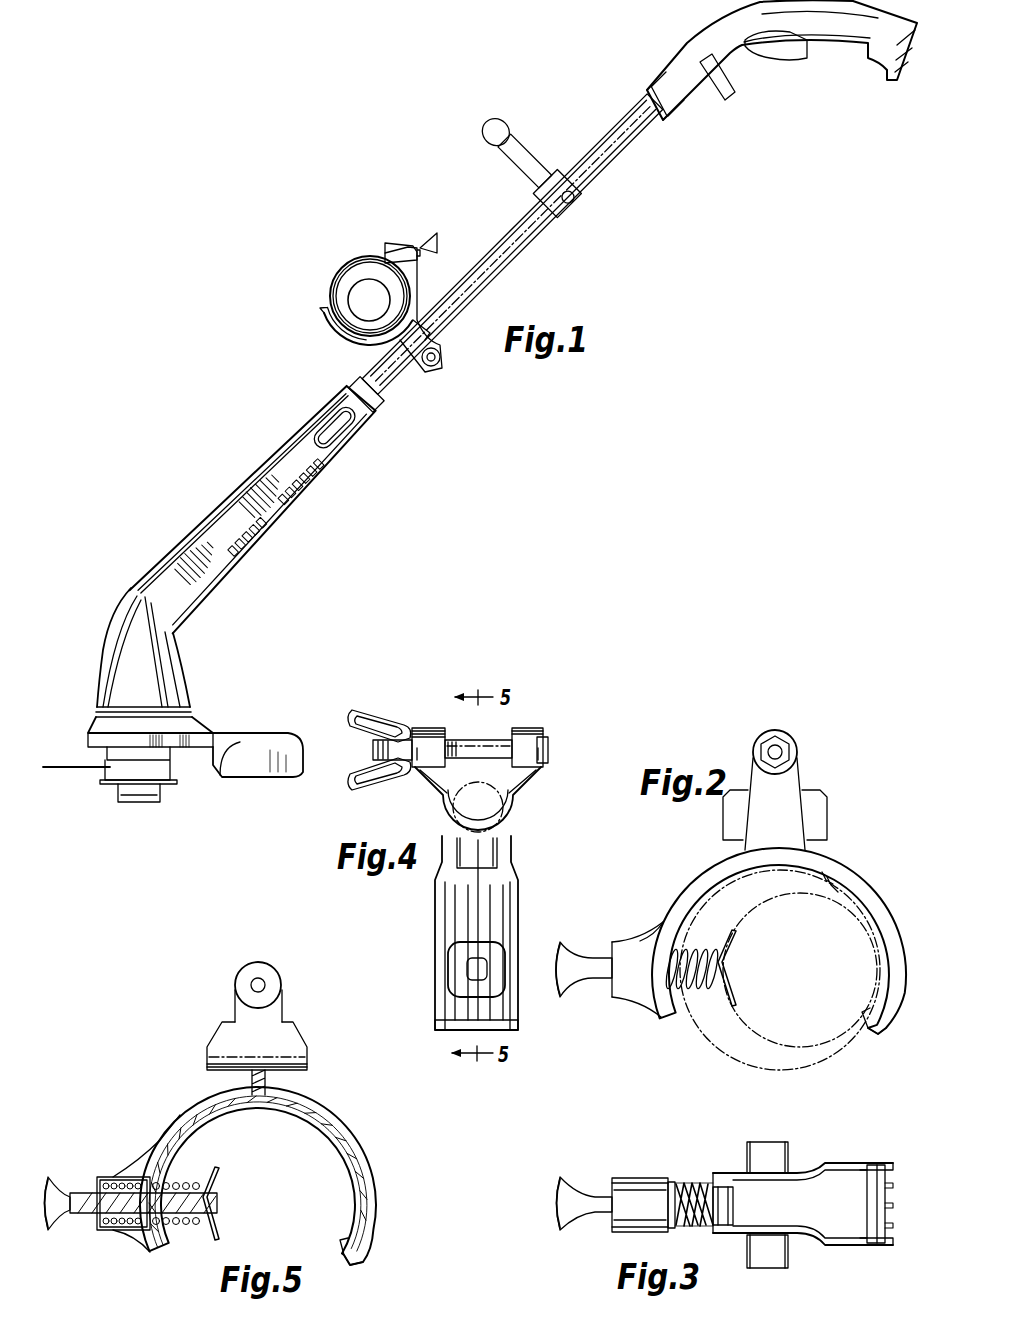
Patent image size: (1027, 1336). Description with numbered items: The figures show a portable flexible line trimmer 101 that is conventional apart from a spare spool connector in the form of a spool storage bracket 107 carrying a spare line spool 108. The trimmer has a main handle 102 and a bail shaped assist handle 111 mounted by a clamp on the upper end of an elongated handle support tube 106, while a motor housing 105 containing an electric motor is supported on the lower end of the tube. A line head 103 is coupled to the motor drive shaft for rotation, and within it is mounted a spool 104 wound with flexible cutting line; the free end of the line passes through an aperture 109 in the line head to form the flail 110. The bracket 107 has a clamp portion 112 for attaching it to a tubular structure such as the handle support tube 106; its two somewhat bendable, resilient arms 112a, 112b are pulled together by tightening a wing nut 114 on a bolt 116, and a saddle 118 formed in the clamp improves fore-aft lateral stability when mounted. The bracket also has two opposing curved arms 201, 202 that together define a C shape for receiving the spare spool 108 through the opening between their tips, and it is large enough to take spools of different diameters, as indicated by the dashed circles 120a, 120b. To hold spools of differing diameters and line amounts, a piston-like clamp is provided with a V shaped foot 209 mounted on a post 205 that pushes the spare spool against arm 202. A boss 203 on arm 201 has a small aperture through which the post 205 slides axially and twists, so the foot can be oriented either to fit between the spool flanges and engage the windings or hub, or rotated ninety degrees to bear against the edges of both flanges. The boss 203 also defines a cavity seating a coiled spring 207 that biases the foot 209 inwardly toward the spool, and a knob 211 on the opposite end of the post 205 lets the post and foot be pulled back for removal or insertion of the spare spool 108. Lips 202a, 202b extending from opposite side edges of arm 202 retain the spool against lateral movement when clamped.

In FIG. 1, the flexible line trimmer 101 is at (278, 201).
In FIG. 1, the main handle 102 is at (690, 40).
In FIG. 1, the line head 103 is at (170, 768).
In FIG. 1, the spool 104 is at (165, 785).
In FIG. 1, the motor housing 105 is at (120, 598).
In FIG. 1, the handle support tube 106 is at (548, 228).
In FIG. 4, the handle support tube 106 is at (500, 780).
In FIG. 1, the spool storage bracket 107 is at (344, 278).
In FIG. 4, the spool storage bracket 107 is at (492, 817).
In FIG. 2, the spool storage bracket 107 is at (732, 912).
In FIG. 5, the spool storage bracket 107 is at (253, 1136).
In FIG. 3, the spool storage bracket 107 is at (726, 1202).
In FIG. 1, the spare line spool 108 is at (352, 258).
In FIG. 1, the aperture 109 is at (115, 768).
In FIG. 1, the flail 110 is at (50, 770).
In FIG. 1, the assist handle 111 is at (489, 130).
In FIG. 1, the clamp portion 112 is at (445, 352).
In FIG. 5, the clamp portion 112 is at (286, 1005).
In FIG. 4, the clamp arm 112a is at (425, 728).
In FIG. 4, the clamp arm 112b is at (540, 728).
In FIG. 4, the wing nut 114 is at (375, 712).
In FIG. 4, the bolt 116 is at (495, 740).
In FIG. 4, the saddle 118 is at (445, 832).
In FIG. 2, the saddle 118 is at (823, 800).
In FIG. 5, the saddle 118 is at (226, 1043).
In FIG. 3, the saddle 118 is at (765, 1152).
In FIG. 2, the dashed circle 120a is at (740, 1068).
In FIG. 2, the dashed circle 120b is at (716, 1051).
In FIG. 2, the curved arm 201 is at (672, 912).
In FIG. 5, the curved arm 201 is at (163, 1123).
In FIG. 3, the curved arm 201 is at (640, 1178).
In FIG. 2, the curved arm 202 is at (780, 941).
In FIG. 5, the curved arm 202 is at (300, 1176).
In FIG. 3, the curved arm 202 is at (813, 1205).
In FIG. 5, the lip 202a is at (350, 1212).
In FIG. 3, the lip 202a is at (850, 1246).
In FIG. 2, the lip 202b is at (860, 1010).
In FIG. 3, the lip 202b is at (872, 1163).
In FIG. 2, the boss 203 is at (648, 940).
In FIG. 5, the boss 203 is at (125, 1235).
In FIG. 2, the post 205 is at (600, 980).
In FIG. 5, the post 205 is at (80, 1215).
In FIG. 3, the post 205 is at (598, 1215).
In FIG. 2, the coiled spring 207 is at (705, 950).
In FIG. 5, the coiled spring 207 is at (178, 1182).
In FIG. 3, the coiled spring 207 is at (695, 1185).
In FIG. 2, the V-shaped foot 209 is at (736, 960).
In FIG. 5, the V-shaped foot 209 is at (224, 1200).
In FIG. 3, the V-shaped foot 209 is at (736, 1210).
In FIG. 1, the knob 211 is at (432, 238).
In FIG. 4, the knob 211 is at (455, 965).
In FIG. 2, the knob 211 is at (583, 945).
In FIG. 5, the knob 211 is at (80, 1180).
In FIG. 3, the knob 211 is at (578, 1180).